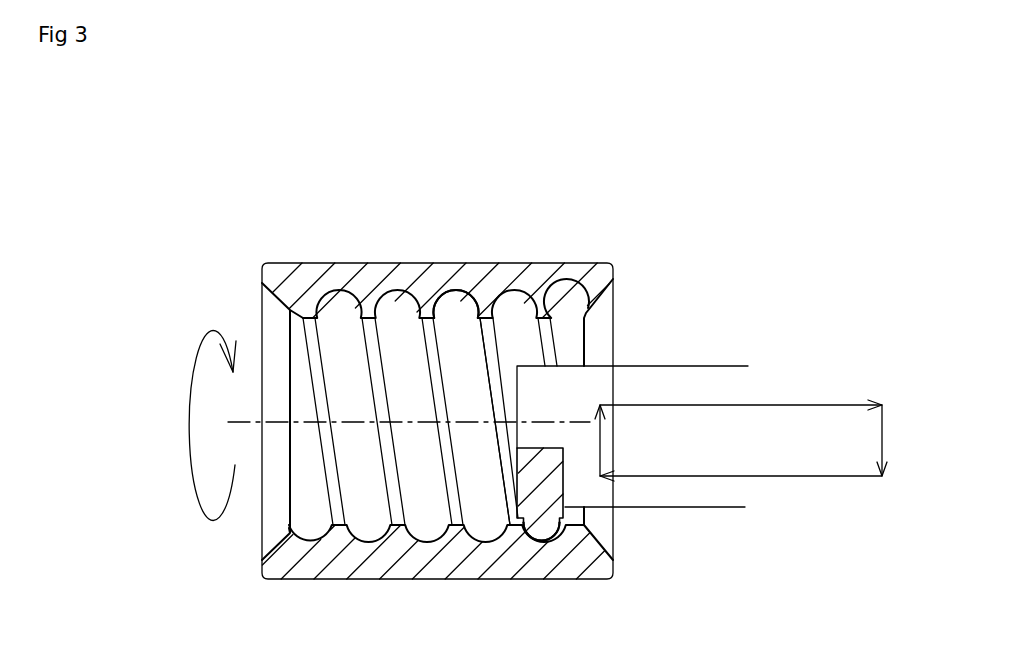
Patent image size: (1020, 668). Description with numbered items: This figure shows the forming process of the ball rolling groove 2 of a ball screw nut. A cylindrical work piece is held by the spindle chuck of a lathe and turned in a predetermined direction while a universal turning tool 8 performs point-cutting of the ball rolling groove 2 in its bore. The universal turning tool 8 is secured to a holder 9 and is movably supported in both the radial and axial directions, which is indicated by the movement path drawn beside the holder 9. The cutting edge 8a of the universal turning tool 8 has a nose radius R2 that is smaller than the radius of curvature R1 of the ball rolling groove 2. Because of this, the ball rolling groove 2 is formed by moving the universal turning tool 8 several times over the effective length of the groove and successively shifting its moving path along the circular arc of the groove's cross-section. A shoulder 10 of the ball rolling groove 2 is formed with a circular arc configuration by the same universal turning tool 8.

The ball rolling groove 2 is at (528, 317).
The radius of curvature of the ball rolling groove R1 is at (463, 320).
The shoulder 10 is at (508, 521).
The holder 9 is at (665, 397).
The universal turning tool 8 is at (548, 480).
The cutting edge 8a is at (530, 532).
The nose radius R2 is at (549, 528).